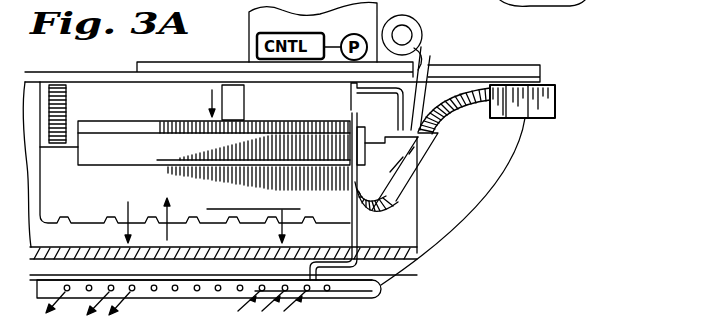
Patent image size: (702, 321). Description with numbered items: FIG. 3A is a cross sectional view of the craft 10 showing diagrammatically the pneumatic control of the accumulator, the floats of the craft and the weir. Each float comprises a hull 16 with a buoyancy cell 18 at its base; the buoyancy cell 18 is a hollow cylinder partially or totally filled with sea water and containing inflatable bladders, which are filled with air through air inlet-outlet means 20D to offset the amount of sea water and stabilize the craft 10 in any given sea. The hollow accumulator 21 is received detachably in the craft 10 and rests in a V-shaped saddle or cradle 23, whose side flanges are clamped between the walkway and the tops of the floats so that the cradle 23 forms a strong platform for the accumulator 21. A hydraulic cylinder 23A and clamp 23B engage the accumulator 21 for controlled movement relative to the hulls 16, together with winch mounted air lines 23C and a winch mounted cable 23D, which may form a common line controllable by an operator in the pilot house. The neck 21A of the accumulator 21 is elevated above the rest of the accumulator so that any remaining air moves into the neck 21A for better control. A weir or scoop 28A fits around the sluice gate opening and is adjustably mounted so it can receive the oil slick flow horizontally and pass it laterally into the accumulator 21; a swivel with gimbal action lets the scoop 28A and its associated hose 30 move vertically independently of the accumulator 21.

The craft 10 is at (511, 169).
The hull 16 is at (486, 206).
The buoyancy cell 18 is at (384, 290).
The air inlet-outlet means 20D is at (240, 291).
The accumulator 21 is at (112, 191).
The neck 21A is at (433, 141).
The cradle 23 is at (421, 246).
The hydraulic cylinder 23A is at (247, 107).
The clamp 23B is at (124, 127).
The winch mounted air lines 23C is at (424, 50).
The winch mounted cable 23D is at (423, 99).
The weir or scoop 28A is at (558, 97).
The hose 30 is at (462, 120).